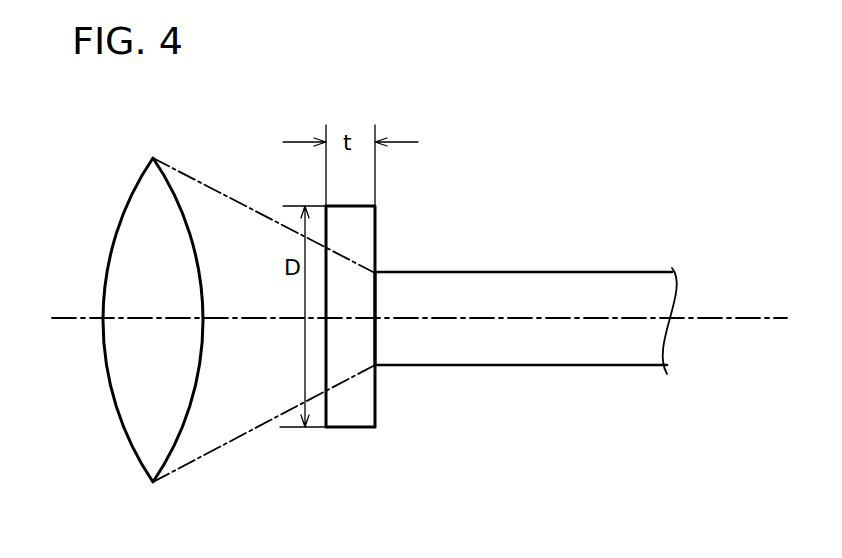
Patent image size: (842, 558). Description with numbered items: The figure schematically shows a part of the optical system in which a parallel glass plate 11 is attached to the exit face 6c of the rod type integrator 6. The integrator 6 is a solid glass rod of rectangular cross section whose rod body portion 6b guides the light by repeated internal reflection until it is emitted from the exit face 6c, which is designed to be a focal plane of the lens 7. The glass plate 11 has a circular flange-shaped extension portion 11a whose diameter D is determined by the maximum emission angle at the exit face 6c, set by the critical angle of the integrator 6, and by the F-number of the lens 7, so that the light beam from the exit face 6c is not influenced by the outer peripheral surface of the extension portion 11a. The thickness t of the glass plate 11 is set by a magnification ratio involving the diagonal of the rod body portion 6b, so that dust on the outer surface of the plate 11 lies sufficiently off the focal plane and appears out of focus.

The lens 7 is at (135, 236).
The parallel glass plate 11 is at (353, 332).
The circular flange-shaped extension portion 11a is at (353, 238).
The integrator 6 is at (541, 255).
The rod body portion 6b is at (610, 350).
The exit face 6c is at (375, 297).